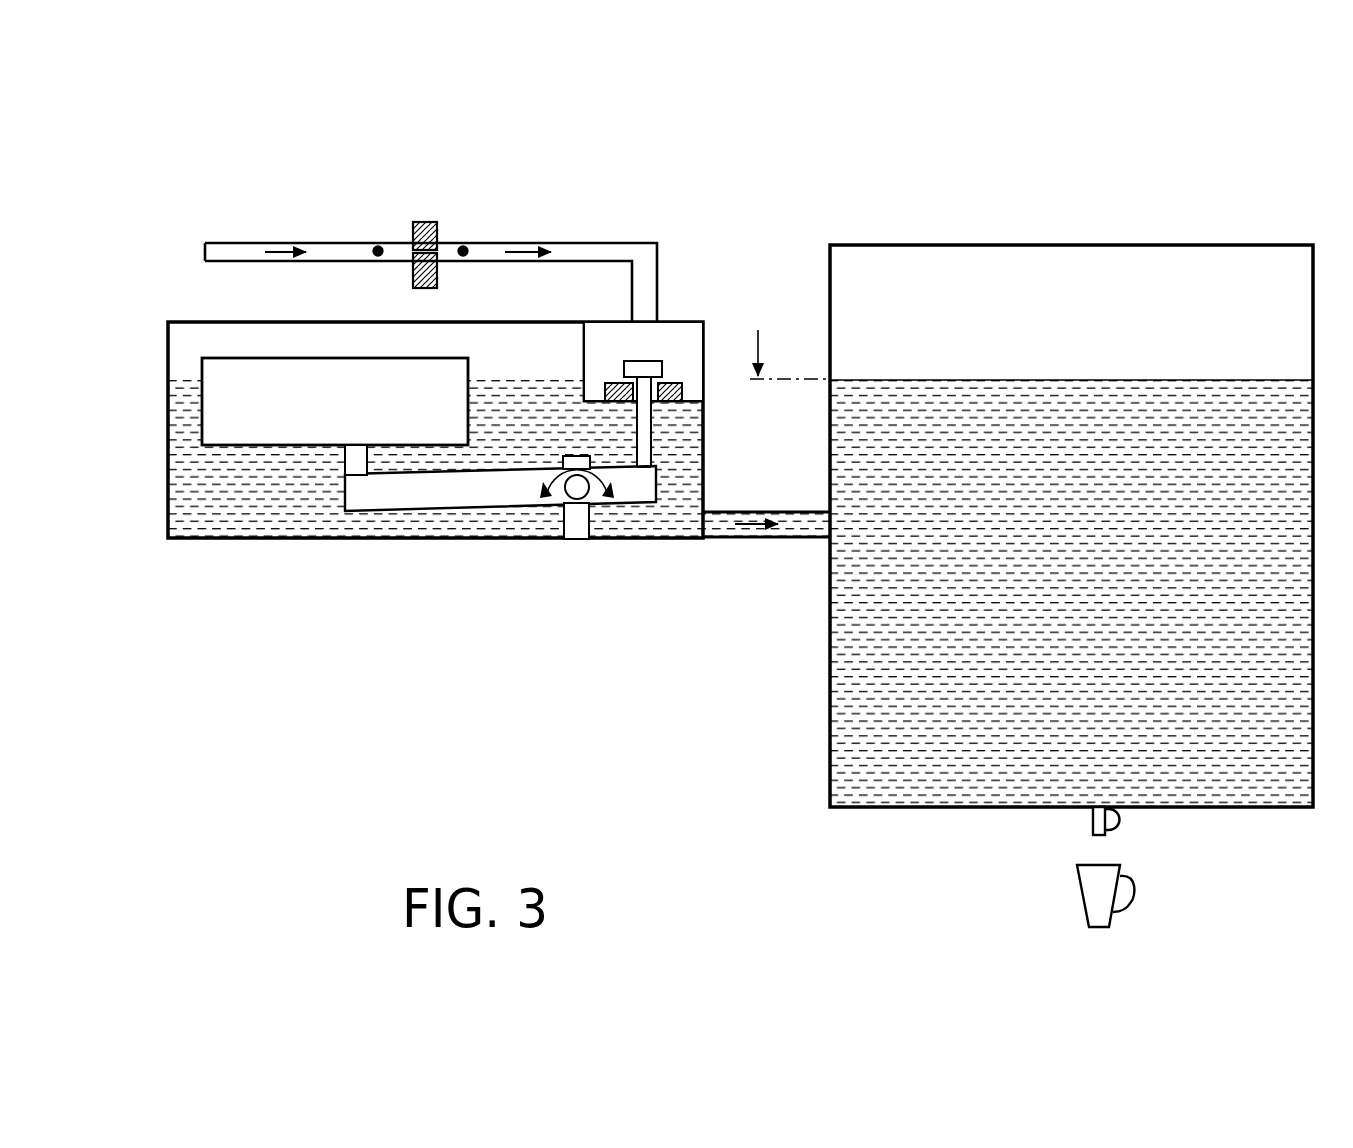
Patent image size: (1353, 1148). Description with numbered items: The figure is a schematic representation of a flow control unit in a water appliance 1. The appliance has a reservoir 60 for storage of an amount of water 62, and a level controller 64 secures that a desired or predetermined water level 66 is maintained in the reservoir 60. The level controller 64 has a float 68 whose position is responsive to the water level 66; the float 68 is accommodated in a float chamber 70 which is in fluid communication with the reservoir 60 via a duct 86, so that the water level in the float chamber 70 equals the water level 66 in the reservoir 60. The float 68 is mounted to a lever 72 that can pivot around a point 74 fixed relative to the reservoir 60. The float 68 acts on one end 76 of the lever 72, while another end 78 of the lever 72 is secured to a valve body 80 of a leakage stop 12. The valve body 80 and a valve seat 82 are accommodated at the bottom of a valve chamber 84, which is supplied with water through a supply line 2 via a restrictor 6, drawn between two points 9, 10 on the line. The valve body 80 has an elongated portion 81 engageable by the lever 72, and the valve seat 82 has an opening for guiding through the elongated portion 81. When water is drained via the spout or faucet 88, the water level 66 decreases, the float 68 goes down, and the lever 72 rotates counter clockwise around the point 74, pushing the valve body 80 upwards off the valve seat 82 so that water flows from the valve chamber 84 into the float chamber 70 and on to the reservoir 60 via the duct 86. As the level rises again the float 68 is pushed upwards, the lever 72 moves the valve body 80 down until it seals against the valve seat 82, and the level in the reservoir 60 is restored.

The water appliance 1 is at (690, 114).
The supply line 2 is at (584, 184).
The restrictor 6 is at (423, 221).
The upstream connection point 9 is at (378, 244).
The downstream connection point 10 is at (463, 244).
The leakage stop 12 is at (590, 342).
The valve chamber 84 is at (607, 333).
The reservoir 60 is at (1075, 265).
The water 62 is at (843, 763).
The level controller 64 is at (734, 221).
The water level 66 is at (760, 350).
The float 68 is at (348, 416).
The float chamber 70 is at (182, 342).
The lever 72 is at (477, 497).
The point 74 is at (577, 496).
The end of the lever 76 is at (359, 485).
The another end of the lever 78 is at (643, 476).
The valve body 80 is at (650, 360).
The elongated portion 81 is at (652, 432).
The valve seat 82 is at (682, 391).
The duct 86 is at (762, 530).
The spout or faucet 88 is at (1092, 818).